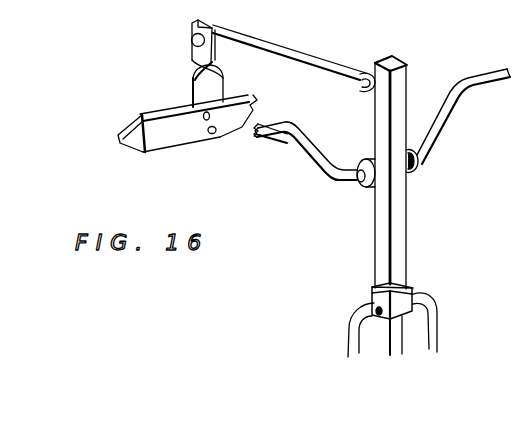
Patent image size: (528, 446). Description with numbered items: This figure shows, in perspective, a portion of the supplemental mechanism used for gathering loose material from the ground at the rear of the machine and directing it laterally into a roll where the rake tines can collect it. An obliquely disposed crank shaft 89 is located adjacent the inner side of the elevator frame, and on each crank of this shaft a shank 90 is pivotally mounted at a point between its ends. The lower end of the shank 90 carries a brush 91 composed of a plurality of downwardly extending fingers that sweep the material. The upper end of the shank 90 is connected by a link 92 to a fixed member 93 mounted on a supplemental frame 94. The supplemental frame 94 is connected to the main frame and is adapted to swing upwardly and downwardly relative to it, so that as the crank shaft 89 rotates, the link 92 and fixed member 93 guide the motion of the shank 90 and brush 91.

The crank shaft 89 is at (475, 83).
The shank 90 is at (390, 249).
The brush 91 is at (422, 309).
The link 92 is at (292, 42).
The fixed member 93 is at (205, 77).
The supplemental frame 94 is at (198, 138).